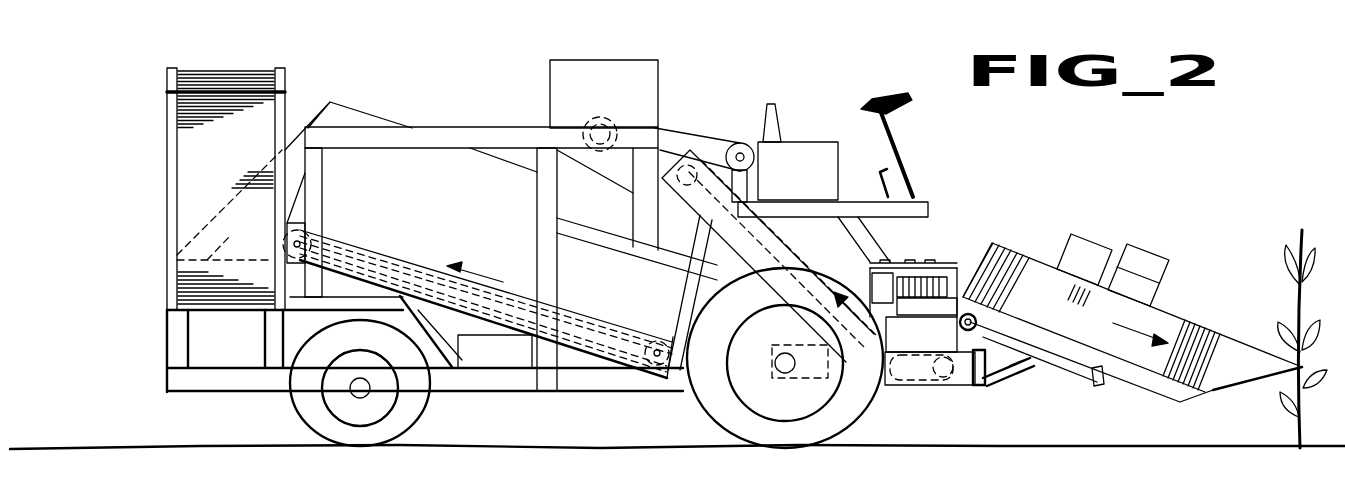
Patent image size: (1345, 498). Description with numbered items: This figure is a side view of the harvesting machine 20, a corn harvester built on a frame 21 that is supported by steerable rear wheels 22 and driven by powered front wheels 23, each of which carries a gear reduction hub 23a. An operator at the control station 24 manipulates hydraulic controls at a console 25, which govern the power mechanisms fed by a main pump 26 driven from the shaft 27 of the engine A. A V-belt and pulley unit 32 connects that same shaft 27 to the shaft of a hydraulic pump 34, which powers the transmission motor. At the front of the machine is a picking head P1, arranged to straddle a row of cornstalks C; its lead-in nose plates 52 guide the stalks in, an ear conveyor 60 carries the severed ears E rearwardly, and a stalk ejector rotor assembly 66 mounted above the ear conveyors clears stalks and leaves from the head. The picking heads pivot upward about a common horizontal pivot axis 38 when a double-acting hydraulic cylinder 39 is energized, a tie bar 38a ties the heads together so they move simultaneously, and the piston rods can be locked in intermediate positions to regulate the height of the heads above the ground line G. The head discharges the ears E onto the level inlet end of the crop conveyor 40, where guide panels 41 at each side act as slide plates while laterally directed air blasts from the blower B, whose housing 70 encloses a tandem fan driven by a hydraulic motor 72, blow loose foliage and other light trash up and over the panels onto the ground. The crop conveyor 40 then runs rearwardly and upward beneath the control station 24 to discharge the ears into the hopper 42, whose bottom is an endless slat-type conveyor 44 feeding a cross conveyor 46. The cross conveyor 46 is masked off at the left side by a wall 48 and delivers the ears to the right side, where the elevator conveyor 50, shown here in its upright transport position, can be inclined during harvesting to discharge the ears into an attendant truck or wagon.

The harvesting machine 20 is at (417, 90).
The frame 21 is at (590, 385).
The steerable rear wheels 22 is at (412, 412).
The powered front wheels 23 is at (722, 419).
The gear reduction hub 23a is at (825, 378).
The control station 24 is at (849, 120).
The console 25 is at (815, 174).
The main pump 26 is at (583, 120).
The shaft 27 is at (572, 141).
The V-belt and pulley unit 32 is at (668, 136).
The hydraulic pump 34 is at (740, 145).
The horizontal pivot axis 38 is at (978, 324).
The tie bar 38a is at (1096, 378).
The double-acting hydraulic cylinder 39 is at (1008, 373).
The crop conveyor 40 is at (903, 373).
The guide panels 41 is at (928, 349).
The hopper 42 is at (456, 194).
The slat-type conveyor 44 is at (338, 243).
The cross conveyor 46 is at (207, 260).
The wall 48 is at (200, 228).
The elevator conveyor 50 is at (180, 158).
The lead-in nose plates 52 is at (1248, 374).
The ear conveyor 60 is at (1017, 258).
The stalk ejector rotor assembly 66 is at (1153, 297).
The blower housing 70 is at (968, 275).
The hydraulic motor 72 is at (877, 282).
The engine A is at (572, 60).
The blower B is at (924, 252).
The cornstalks C is at (1305, 298).
The ears E is at (1290, 330).
The ground line G is at (1213, 446).
The picking head P1 is at (1212, 304).